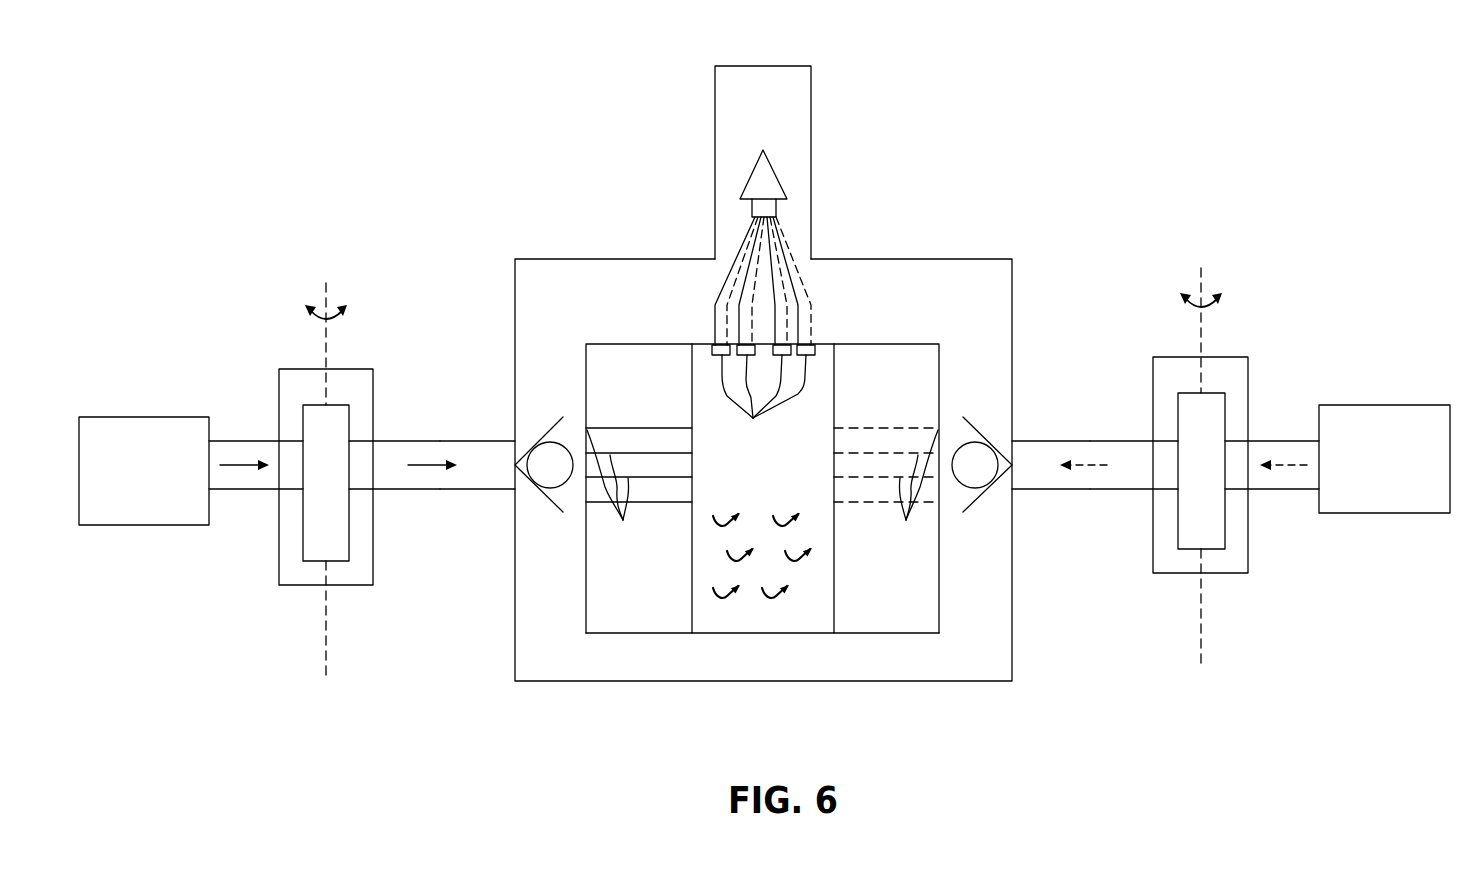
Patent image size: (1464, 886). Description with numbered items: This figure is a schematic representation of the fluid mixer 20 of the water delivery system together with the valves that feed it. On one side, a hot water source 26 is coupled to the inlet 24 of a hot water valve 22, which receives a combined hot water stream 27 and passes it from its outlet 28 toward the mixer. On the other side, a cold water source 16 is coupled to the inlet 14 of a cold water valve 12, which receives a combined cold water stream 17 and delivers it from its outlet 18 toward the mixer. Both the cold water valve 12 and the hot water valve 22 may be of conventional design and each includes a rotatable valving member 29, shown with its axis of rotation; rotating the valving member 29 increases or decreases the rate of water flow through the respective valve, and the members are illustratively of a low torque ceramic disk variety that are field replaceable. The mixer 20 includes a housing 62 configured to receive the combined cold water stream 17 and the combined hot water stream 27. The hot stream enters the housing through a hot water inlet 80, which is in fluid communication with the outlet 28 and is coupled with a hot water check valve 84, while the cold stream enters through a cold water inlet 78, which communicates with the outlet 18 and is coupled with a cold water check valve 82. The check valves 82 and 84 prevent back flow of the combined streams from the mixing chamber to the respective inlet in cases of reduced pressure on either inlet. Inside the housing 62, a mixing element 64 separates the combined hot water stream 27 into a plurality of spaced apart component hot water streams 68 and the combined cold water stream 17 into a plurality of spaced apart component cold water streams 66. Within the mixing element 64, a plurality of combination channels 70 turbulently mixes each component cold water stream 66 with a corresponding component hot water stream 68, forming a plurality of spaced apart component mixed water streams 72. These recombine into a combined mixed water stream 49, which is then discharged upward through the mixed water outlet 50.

The cold water valve 12 is at (1238, 573).
The inlet 14 is at (1285, 489).
The cold water source 16 is at (1367, 513).
The combined cold water stream 17 is at (1084, 465).
The outlet 18 is at (1130, 489).
The fluid mixer 20 is at (906, 252).
The hot water valve 22 is at (352, 585).
The inlet 24 is at (230, 489).
The hot water source 26 is at (150, 525).
The combined hot water stream 27 is at (233, 465).
The outlet 28 is at (398, 489).
The rotatable valving member 29 is at (307, 561).
The combined mixed water stream 49 is at (751, 210).
The mixed water outlet 50 is at (715, 118).
The housing 62 is at (608, 681).
The mixing element 64 is at (900, 344).
The component cold water streams 66 is at (886, 488).
The component hot water streams 68 is at (639, 488).
The combination channels 70 is at (718, 634).
The component mixed water streams 72 is at (763, 395).
The cold water inlet 78 is at (1013, 490).
The hot water inlet 80 is at (512, 490).
The cold water check valve 82 is at (971, 424).
The hot water check valve 84 is at (553, 424).